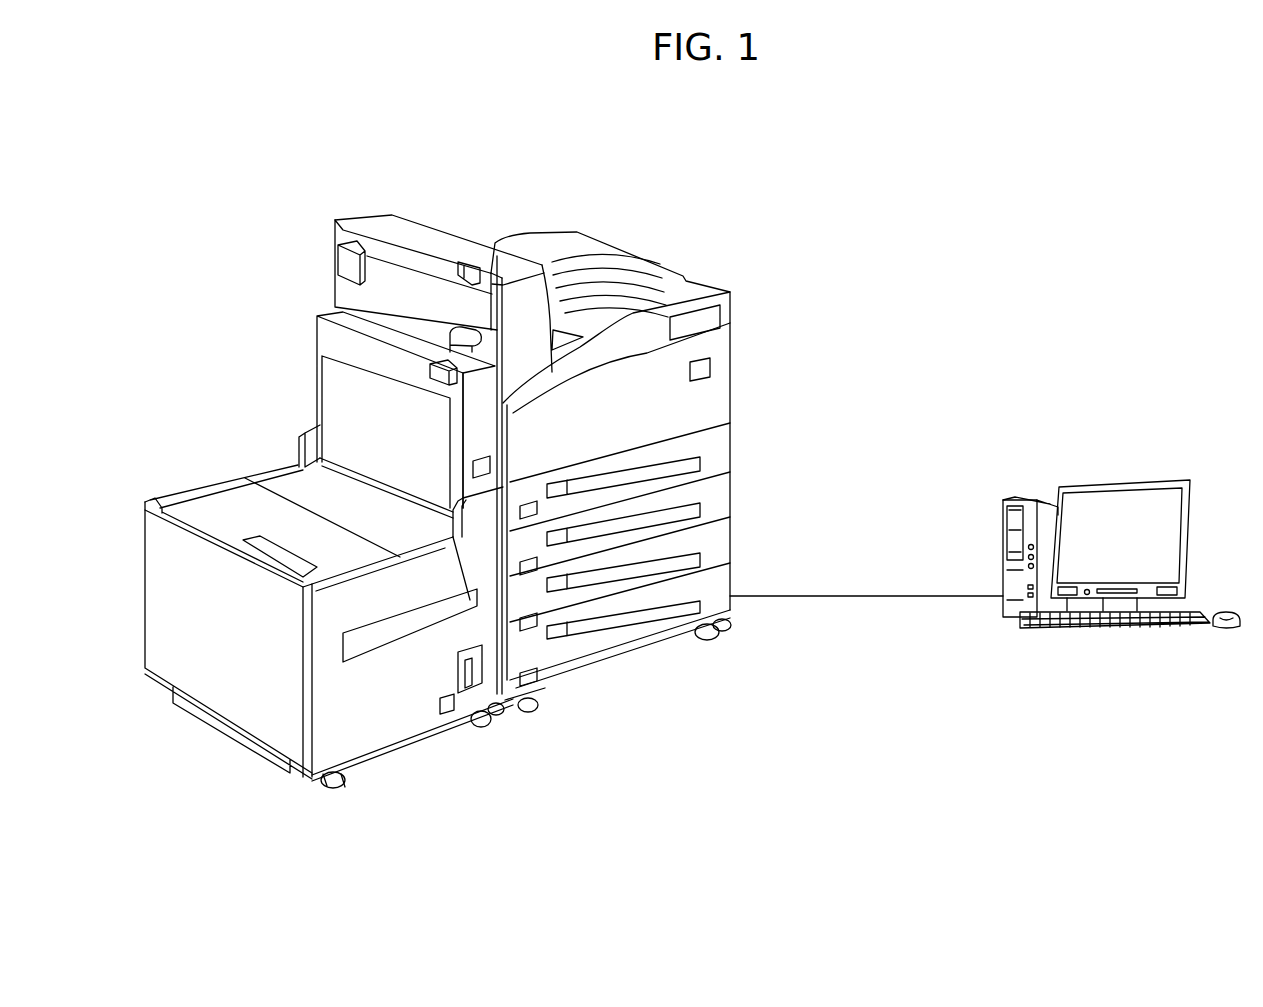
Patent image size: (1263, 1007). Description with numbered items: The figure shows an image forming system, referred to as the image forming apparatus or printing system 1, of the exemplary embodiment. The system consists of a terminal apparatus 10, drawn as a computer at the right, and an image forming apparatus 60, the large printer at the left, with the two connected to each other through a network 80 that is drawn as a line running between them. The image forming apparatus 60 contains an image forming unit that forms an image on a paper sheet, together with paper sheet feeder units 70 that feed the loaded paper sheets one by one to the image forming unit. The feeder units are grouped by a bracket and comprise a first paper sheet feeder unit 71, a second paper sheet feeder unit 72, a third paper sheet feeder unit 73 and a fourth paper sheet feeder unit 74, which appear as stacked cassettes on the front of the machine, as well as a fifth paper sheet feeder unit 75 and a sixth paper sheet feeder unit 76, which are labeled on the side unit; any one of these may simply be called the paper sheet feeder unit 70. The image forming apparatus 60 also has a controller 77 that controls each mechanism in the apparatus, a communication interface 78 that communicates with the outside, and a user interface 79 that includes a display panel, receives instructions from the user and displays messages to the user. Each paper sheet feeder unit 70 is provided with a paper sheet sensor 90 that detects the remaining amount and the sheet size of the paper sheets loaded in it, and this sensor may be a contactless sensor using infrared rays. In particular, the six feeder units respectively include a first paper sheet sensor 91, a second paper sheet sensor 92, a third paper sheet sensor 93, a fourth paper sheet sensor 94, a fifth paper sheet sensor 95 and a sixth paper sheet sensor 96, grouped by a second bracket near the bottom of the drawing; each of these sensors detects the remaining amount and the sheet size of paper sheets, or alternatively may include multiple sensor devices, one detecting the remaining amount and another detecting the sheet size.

The image forming apparatus (printing system) 1 is at (310, 160).
The terminal apparatus 10 is at (1126, 484).
The image forming apparatus 60 is at (772, 190).
The paper sheet feeder units 70 is at (843, 338).
The first paper sheet feeder unit 71 is at (721, 448).
The second paper sheet feeder unit 72 is at (721, 491).
The third paper sheet feeder unit 73 is at (721, 538).
The fourth paper sheet feeder unit 74 is at (721, 590).
The fifth paper sheet feeder unit 75 is at (481, 570).
The sixth paper sheet feeder unit 76 is at (480, 433).
The controller 77 is at (704, 318).
The communication interface (I/F) 78 is at (702, 371).
The user interface (UI) 79 is at (690, 292).
The network 80 is at (915, 598).
The paper sheet sensor 90 is at (650, 739).
The first paper sheet sensor 91 is at (530, 512).
The second paper sheet sensor 92 is at (530, 570).
The third paper sheet sensor 93 is at (530, 627).
The fourth paper sheet sensor 94 is at (530, 683).
The fifth paper sheet sensor 95 is at (447, 707).
The sixth paper sheet sensor 96 is at (483, 495).